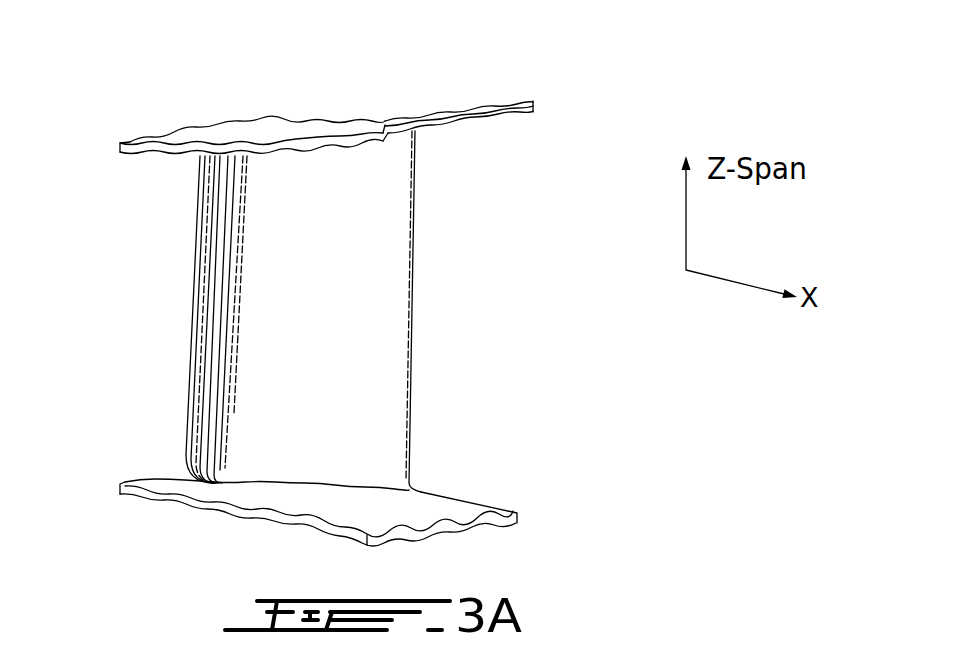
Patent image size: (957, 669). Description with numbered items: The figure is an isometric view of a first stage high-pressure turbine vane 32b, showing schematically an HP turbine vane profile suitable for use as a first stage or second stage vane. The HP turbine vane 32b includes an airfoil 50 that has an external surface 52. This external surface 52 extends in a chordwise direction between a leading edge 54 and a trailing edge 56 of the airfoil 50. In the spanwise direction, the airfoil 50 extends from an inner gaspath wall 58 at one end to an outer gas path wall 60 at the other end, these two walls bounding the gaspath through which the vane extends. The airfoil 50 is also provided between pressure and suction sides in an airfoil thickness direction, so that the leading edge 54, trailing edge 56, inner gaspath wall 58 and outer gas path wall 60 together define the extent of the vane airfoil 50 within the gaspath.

The HP turbine vane 32b is at (550, 170).
The airfoil 50 is at (132, 386).
The external surface 52 is at (218, 218).
The leading edge 54 is at (197, 307).
The trailing edge 56 is at (413, 302).
The inner gaspath wall 58 is at (448, 506).
The outer gas path wall 60 is at (300, 127).